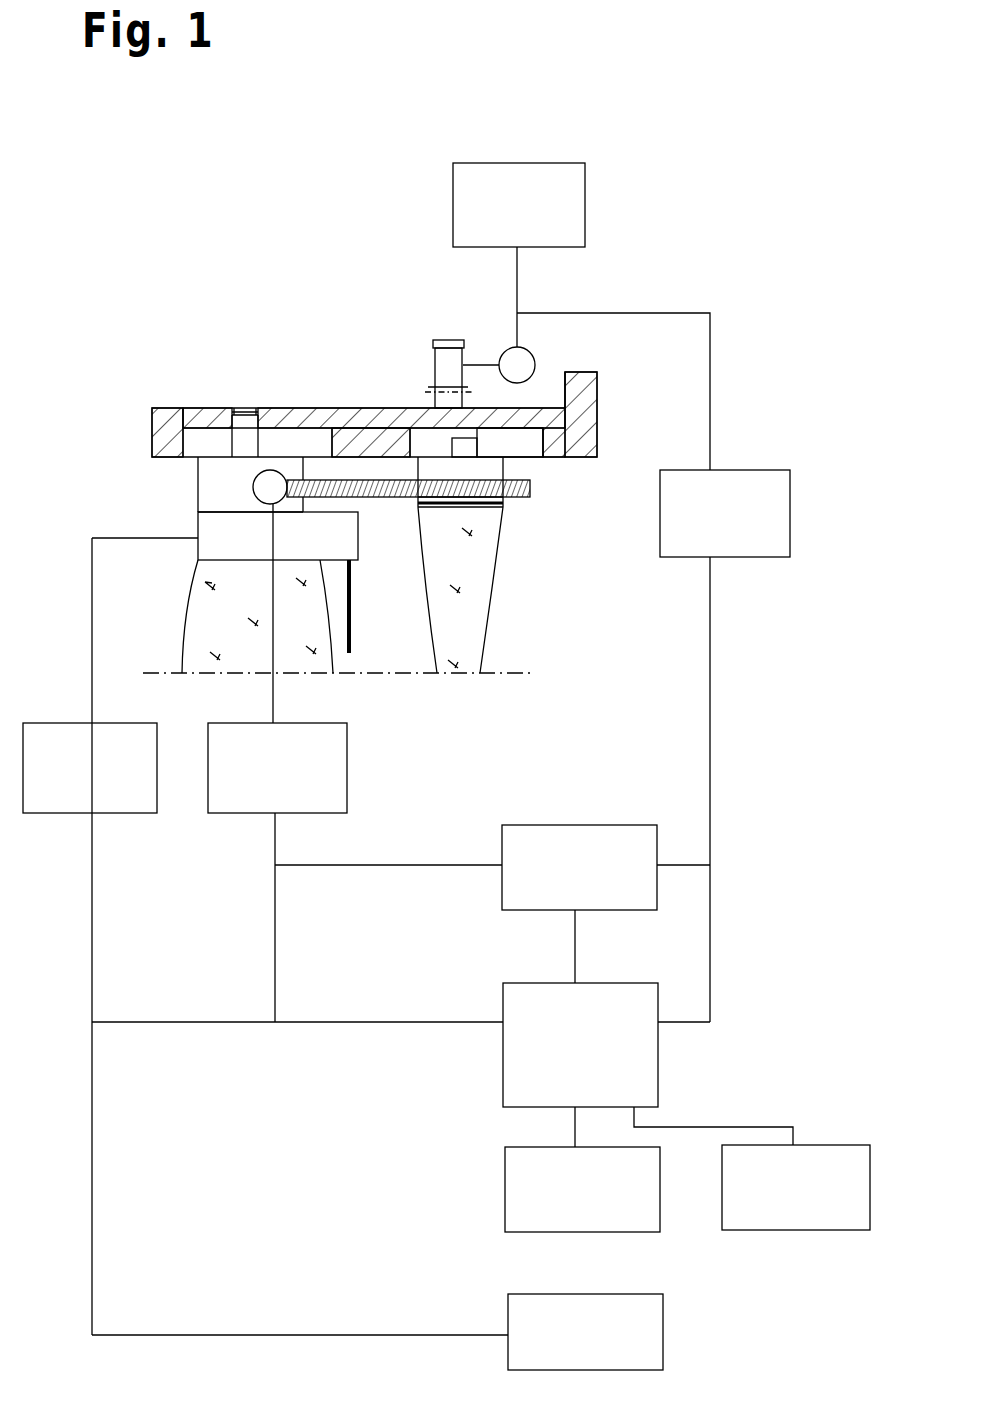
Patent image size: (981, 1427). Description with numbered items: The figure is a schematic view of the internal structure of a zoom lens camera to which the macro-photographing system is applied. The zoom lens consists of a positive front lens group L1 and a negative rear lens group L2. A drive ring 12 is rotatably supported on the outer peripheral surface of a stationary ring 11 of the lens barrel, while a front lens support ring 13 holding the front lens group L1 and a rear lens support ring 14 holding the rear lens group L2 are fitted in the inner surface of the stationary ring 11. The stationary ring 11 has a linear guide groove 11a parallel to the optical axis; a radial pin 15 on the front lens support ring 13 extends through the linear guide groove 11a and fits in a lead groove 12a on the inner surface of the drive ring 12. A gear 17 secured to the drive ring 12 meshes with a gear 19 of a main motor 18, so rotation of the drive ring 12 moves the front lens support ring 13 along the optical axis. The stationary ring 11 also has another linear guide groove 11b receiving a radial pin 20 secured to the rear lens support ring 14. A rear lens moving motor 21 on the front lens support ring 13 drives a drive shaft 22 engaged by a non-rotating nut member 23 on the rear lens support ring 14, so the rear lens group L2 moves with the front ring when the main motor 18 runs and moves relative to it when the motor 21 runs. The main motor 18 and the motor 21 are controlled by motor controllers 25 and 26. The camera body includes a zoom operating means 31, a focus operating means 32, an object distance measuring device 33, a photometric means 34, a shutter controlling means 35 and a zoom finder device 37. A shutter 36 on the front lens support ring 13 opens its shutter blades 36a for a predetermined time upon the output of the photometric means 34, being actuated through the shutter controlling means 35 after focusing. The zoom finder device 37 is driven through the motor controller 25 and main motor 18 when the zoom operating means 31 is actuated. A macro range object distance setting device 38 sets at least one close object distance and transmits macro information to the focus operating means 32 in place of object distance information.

The stationary ring 11 is at (597, 447).
The linear guide groove 11a is at (192, 448).
The linear guide groove 11b is at (525, 457).
The drive ring 12 is at (305, 408).
The lead groove 12a is at (250, 415).
The front lens support ring 13 is at (198, 492).
The rear lens support ring 14 is at (508, 475).
The radial pin 15 is at (236, 415).
The gear 17 is at (437, 404).
The main motor 18 is at (503, 356).
The gear 19 is at (440, 347).
The radial pin 20 is at (463, 444).
The rear lens moving motor 21 is at (256, 499).
The drive shaft 22 is at (390, 497).
The nut member 23 is at (503, 503).
The motor controller 25 is at (660, 520).
The motor controller 26 is at (315, 813).
The zoom operating means 31 is at (502, 885).
The focus operating means 32 is at (503, 1042).
The object distance measuring device 33 is at (505, 1180).
The photometric means 34 is at (508, 1315).
The shutter controlling means 35 is at (135, 813).
The shutter 36 is at (350, 550).
The shutter blades 36a is at (352, 633).
The zoom finder device 37 is at (585, 215).
The macro range object distance setting device 38 is at (833, 1145).
The front lens group L1 is at (196, 643).
The rear lens group L2 is at (478, 648).